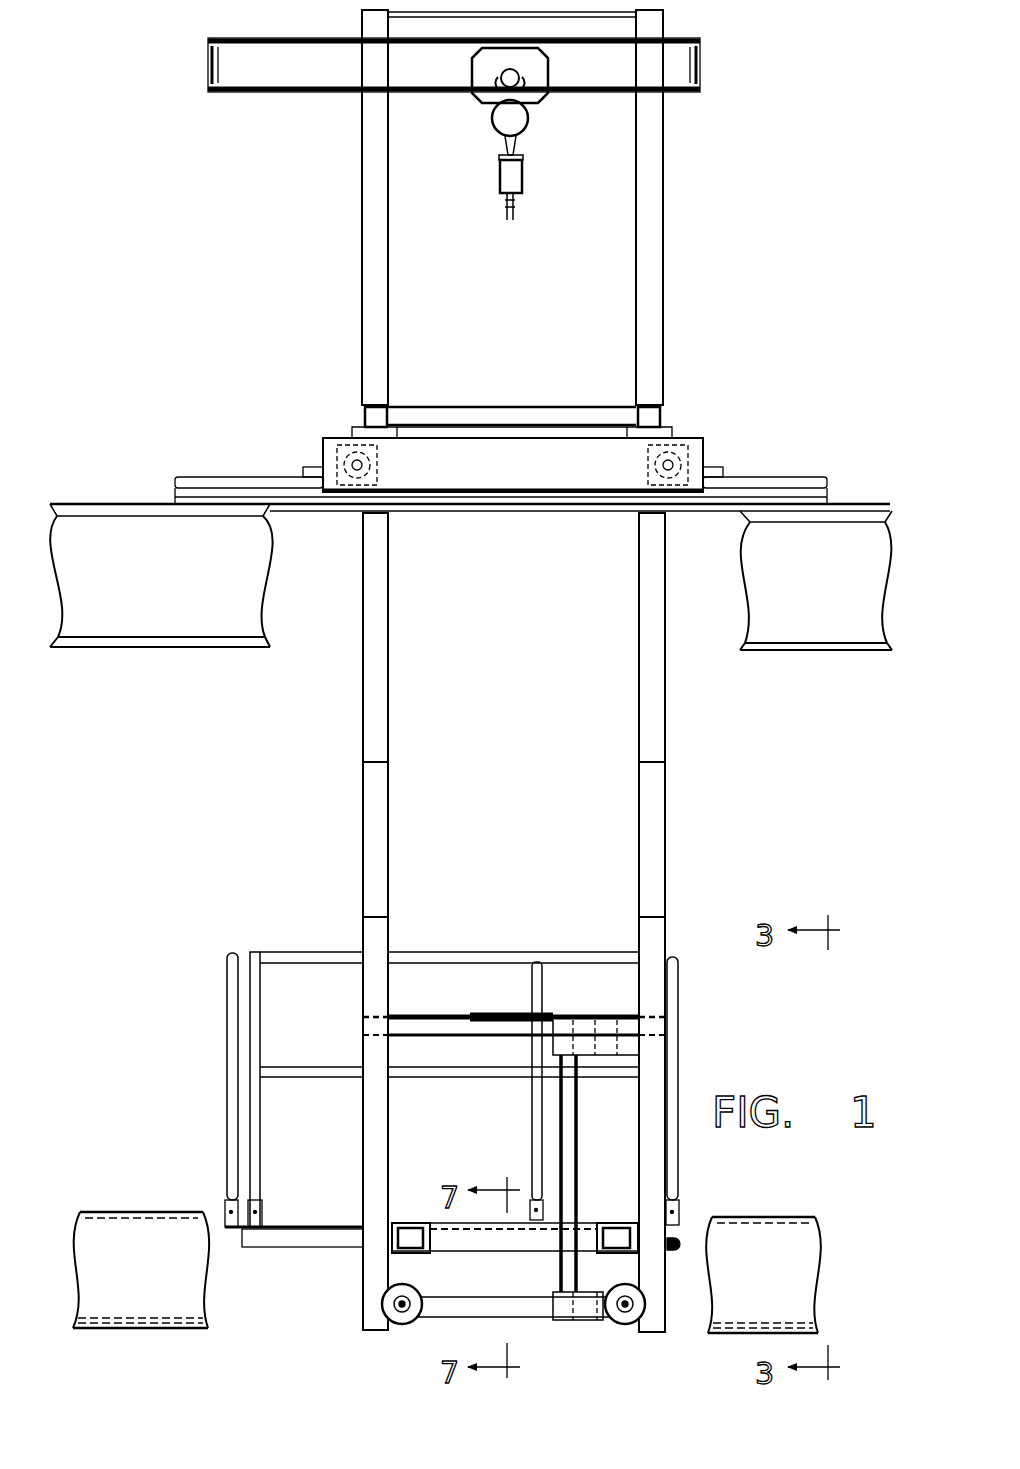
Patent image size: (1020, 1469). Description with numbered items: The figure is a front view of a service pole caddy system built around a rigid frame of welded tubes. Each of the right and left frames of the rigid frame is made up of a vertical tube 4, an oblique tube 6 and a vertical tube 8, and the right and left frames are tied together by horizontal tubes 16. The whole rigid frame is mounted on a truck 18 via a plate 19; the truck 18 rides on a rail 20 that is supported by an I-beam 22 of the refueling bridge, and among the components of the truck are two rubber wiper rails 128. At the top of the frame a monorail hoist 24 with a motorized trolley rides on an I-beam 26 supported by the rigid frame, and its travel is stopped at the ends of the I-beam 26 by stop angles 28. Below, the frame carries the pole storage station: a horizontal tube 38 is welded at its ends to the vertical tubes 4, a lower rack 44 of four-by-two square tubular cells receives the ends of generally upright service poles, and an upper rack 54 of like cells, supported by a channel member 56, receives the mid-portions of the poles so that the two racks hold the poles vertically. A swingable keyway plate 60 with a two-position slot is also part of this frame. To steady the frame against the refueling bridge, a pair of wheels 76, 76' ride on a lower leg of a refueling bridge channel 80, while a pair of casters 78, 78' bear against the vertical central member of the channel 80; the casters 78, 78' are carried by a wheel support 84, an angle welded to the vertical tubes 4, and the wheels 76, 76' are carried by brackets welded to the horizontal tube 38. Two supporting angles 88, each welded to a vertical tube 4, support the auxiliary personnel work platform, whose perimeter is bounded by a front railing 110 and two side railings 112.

The vertical tube 4 is at (373, 940).
The oblique tube 6 is at (373, 820).
The vertical tube 8 is at (373, 605).
The horizontal tubes 16 is at (452, 25).
The truck 18 is at (730, 438).
The plate 19 is at (363, 412).
The rail 20 is at (177, 480).
The I-beam 22 is at (168, 591).
The monorail hoist 24 is at (535, 170).
The I-beam 26 is at (293, 80).
The stop angles 28 is at (210, 58).
The horizontal tube 38 is at (540, 1318).
The lower rack 44 is at (608, 1326).
The upper rack 54 is at (605, 1003).
The channel member 56 is at (578, 1100).
The keyway plate 60 is at (505, 1013).
The wheel 76 is at (658, 1305).
The wheel 76' is at (348, 1305).
The caster 78 is at (611, 1210).
The caster 78' is at (421, 1198).
The refueling bridge channel 80 is at (151, 1280).
The wheel support 84 is at (455, 1252).
The supporting angles 88 is at (680, 1248).
The front railing 110 is at (430, 950).
The side railings 112 is at (230, 1040).
The rubber wiper rails 128 is at (303, 470).